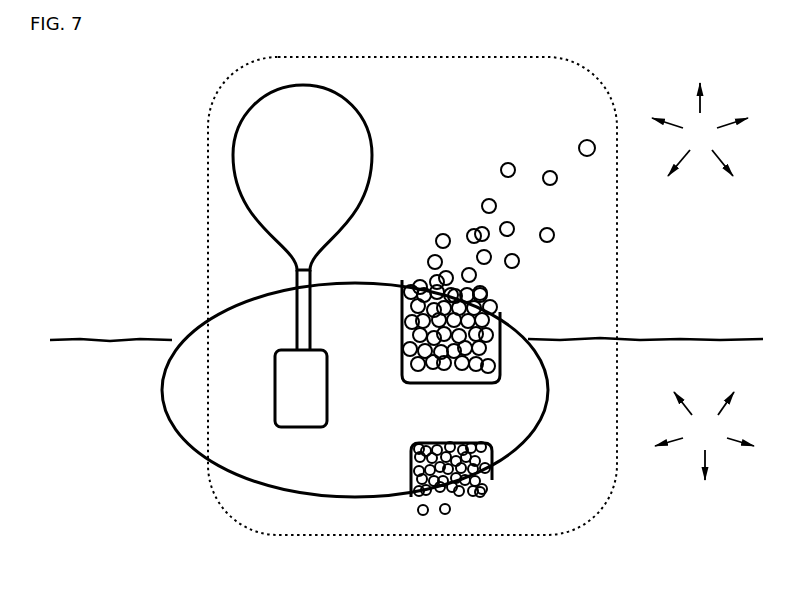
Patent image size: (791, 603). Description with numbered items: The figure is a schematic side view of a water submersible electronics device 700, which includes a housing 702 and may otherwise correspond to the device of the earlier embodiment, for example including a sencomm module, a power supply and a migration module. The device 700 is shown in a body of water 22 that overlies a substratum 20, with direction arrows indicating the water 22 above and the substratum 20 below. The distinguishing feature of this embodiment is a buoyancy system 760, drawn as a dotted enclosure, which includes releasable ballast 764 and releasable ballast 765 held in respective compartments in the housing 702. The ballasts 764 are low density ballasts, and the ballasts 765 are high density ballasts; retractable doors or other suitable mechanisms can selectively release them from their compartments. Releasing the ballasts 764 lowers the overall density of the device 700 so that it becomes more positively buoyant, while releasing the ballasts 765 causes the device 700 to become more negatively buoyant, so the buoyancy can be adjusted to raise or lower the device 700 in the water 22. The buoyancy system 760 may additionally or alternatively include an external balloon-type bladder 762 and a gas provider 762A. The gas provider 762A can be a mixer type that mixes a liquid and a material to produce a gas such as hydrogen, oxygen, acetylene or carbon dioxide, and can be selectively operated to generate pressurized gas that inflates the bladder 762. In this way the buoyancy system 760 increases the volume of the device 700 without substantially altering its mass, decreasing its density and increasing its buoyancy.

The electronics device 700 is at (137, 141).
The buoyancy system 760 is at (624, 302).
The housing 702 is at (158, 392).
The external balloon-type bladder 762 is at (279, 189).
The gas provider 762A is at (296, 387).
The releasable ballast 764 is at (574, 148).
The releasable ballast 765 is at (459, 513).
The body of water 22 is at (700, 129).
The substratum 20 is at (704, 436).